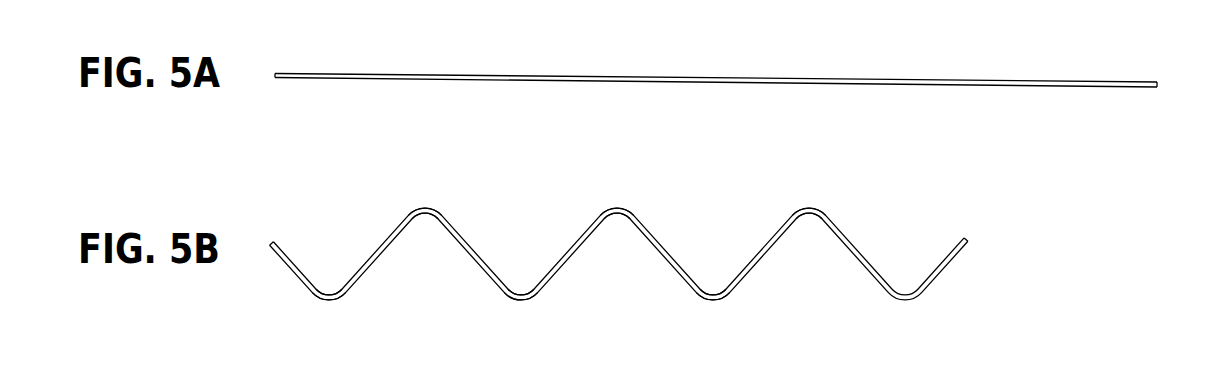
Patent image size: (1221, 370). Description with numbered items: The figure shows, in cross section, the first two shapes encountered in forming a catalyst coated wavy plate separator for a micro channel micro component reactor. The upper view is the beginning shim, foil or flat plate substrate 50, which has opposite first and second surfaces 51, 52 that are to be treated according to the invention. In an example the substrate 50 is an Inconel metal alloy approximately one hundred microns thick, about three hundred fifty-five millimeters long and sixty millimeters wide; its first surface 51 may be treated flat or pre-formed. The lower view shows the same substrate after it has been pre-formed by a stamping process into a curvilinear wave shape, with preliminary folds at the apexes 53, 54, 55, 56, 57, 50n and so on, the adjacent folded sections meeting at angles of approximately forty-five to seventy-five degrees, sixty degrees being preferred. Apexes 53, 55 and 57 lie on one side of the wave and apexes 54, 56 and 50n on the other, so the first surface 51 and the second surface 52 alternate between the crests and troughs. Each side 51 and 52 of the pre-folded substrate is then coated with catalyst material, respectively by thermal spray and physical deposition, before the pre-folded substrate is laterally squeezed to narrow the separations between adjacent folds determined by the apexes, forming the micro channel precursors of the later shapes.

In FIG. 5A, the flat plate substrate 50 is at (716, 84).
In FIG. 5B, the apex 50n is at (807, 208).
In FIG. 5A, the first surface 51 is at (1005, 72).
In FIG. 5B, the first surface 51 is at (843, 235).
In FIG. 5A, the second surface 52 is at (1090, 96).
In FIG. 5B, the second surface 52 is at (934, 282).
In FIG. 5B, the apex 53 is at (328, 300).
In FIG. 5B, the apex 54 is at (425, 208).
In FIG. 5B, the apex 55 is at (518, 300).
In FIG. 5B, the apex 56 is at (617, 208).
In FIG. 5B, the apex 57 is at (713, 300).